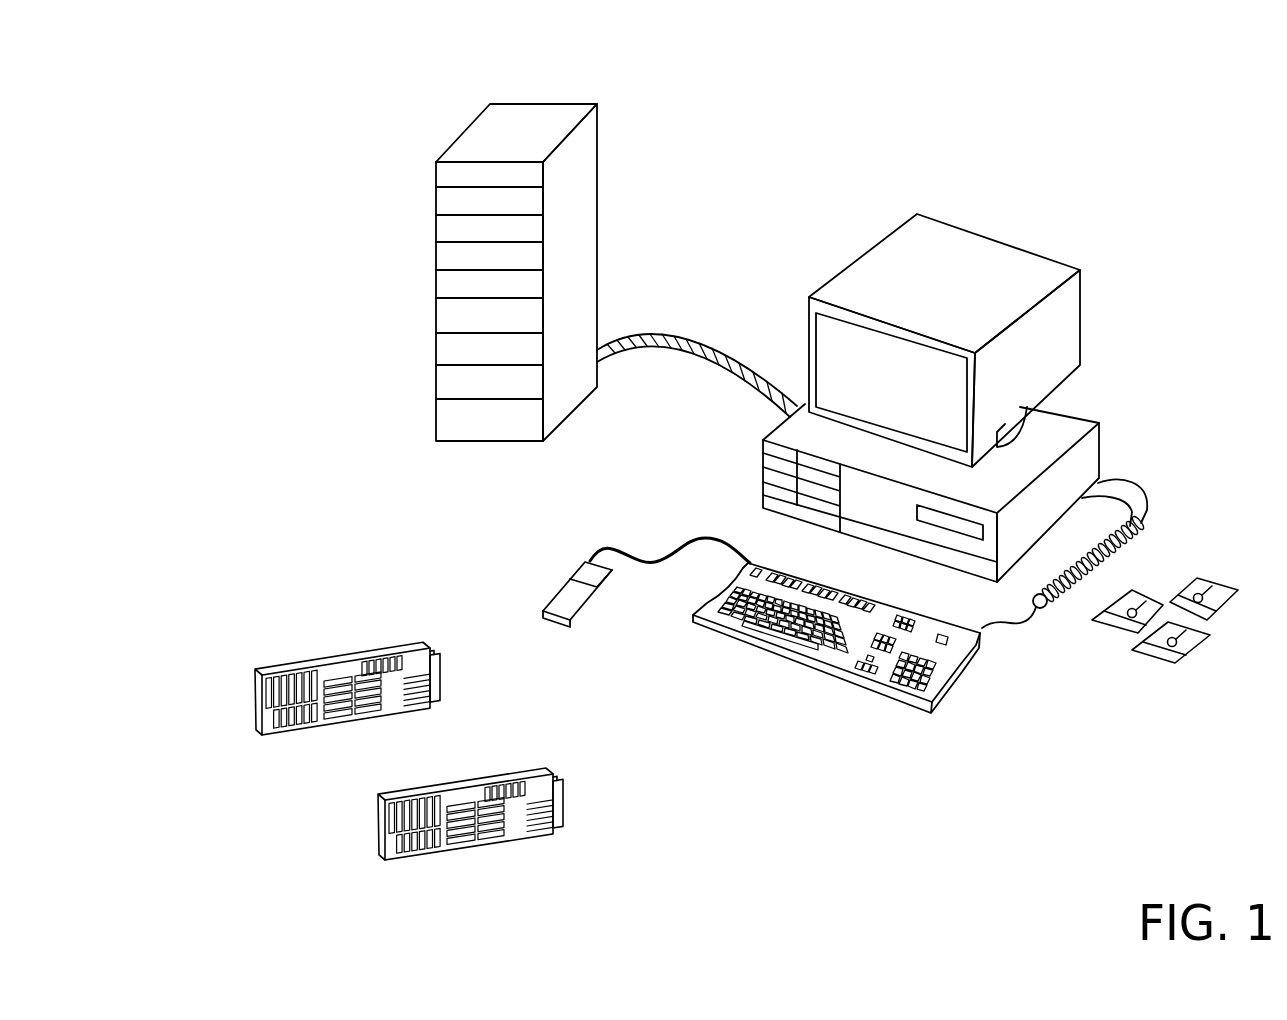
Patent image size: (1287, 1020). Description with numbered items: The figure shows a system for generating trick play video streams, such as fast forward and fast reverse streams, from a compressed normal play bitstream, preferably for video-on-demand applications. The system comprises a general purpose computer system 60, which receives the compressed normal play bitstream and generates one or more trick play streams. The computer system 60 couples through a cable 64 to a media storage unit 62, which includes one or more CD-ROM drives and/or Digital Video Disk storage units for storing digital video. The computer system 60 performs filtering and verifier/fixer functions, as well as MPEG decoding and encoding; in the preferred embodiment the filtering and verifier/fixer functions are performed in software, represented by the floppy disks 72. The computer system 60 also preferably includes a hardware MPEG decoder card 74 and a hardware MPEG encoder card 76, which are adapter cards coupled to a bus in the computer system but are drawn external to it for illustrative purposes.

The computer system 60 is at (970, 297).
The media storage unit 62 is at (408, 184).
The cable 64 is at (655, 335).
The floppy disks 72 is at (1163, 557).
The MPEG decoder card 74 is at (355, 655).
The MPEG encoder card 76 is at (500, 782).